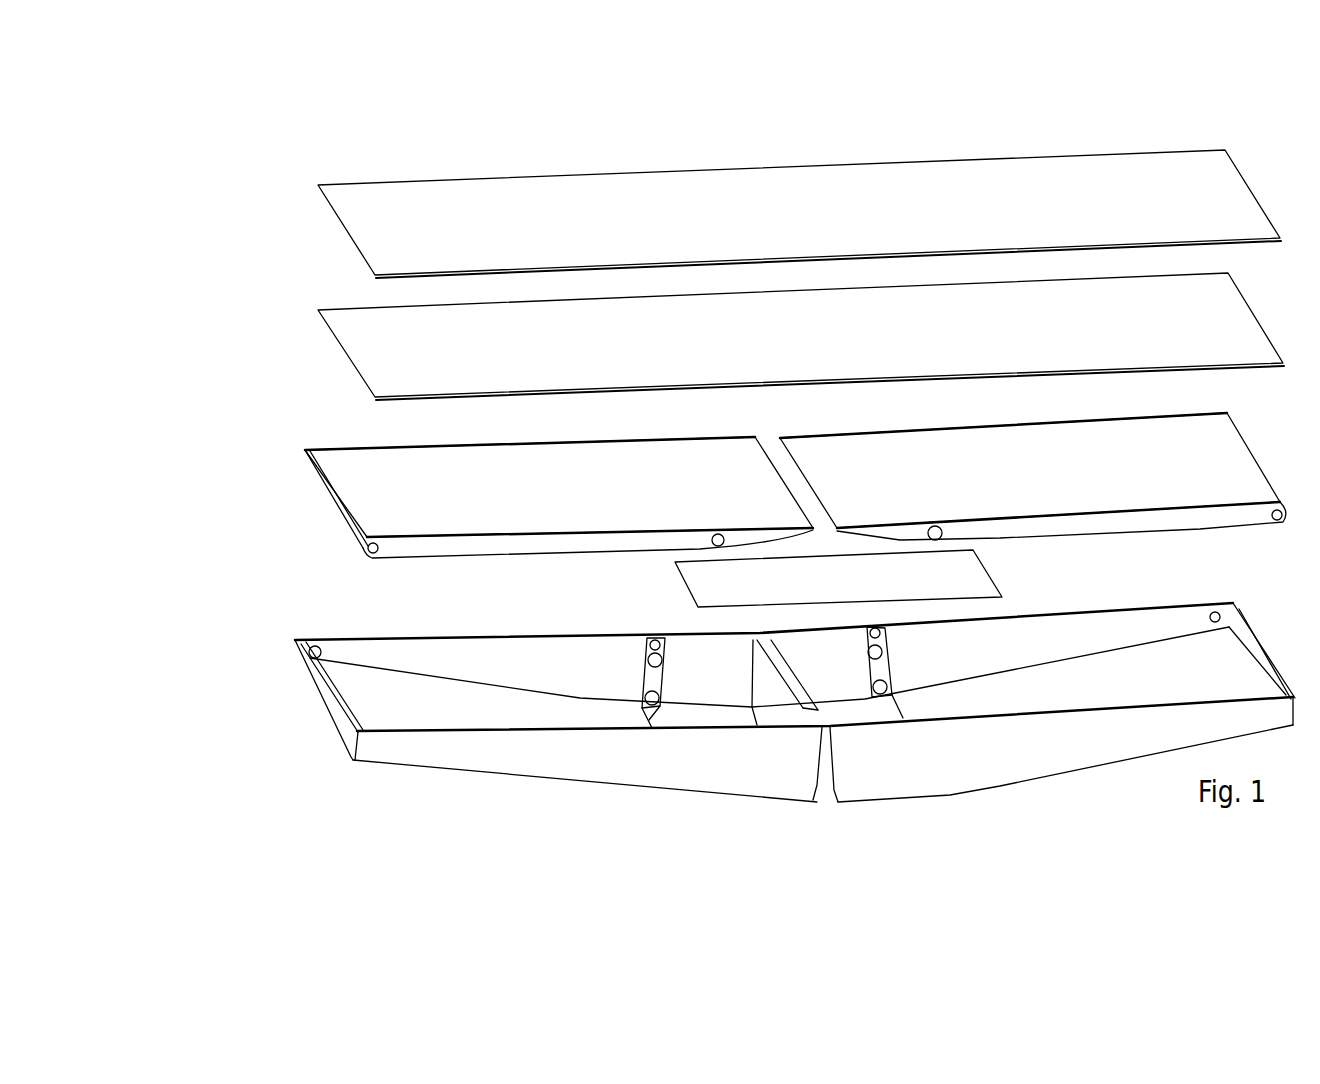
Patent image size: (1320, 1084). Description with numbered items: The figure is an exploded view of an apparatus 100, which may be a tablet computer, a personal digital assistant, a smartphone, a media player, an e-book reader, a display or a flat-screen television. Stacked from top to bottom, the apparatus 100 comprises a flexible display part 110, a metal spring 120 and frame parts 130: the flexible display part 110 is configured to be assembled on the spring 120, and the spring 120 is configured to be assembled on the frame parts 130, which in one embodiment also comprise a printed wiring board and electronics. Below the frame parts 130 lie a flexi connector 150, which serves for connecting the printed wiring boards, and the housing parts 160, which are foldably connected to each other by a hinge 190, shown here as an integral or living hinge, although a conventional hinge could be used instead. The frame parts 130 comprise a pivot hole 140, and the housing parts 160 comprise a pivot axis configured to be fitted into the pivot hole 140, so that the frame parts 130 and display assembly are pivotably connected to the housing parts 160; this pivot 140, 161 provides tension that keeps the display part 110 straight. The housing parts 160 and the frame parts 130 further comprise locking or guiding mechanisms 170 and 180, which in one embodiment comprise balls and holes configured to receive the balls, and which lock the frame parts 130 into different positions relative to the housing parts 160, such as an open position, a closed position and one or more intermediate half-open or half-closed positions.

The apparatus 100 is at (266, 164).
The flexible display part 110 is at (358, 215).
The metal spring 120 is at (337, 323).
The frame parts 130 is at (368, 479).
The pivot hole 140 is at (367, 548).
The flexi connector 150 is at (705, 582).
The housing parts 160 is at (330, 733).
The pivot 161 is at (307, 655).
The locking or guiding mechanism 170 is at (712, 542).
The locking or guiding mechanism 180 is at (646, 687).
The hinge 190 is at (810, 710).